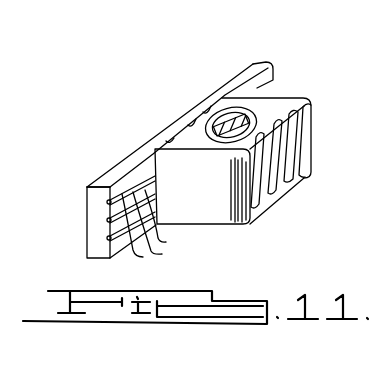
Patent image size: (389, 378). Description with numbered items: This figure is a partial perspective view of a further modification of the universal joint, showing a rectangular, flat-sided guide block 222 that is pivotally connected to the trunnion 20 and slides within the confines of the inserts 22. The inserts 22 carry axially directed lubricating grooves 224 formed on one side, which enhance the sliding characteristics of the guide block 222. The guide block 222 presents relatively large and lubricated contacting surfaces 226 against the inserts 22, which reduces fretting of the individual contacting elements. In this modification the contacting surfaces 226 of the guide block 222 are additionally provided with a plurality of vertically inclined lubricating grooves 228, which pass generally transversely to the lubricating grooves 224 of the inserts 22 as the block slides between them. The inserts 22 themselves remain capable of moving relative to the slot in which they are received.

The trunnion 20 is at (245, 117).
The inserts 22 is at (116, 167).
The guide block 222 is at (215, 216).
The lubricating grooves 224 is at (147, 259).
The contacting surfaces 226 is at (190, 122).
The lubricating grooves 228 is at (207, 110).